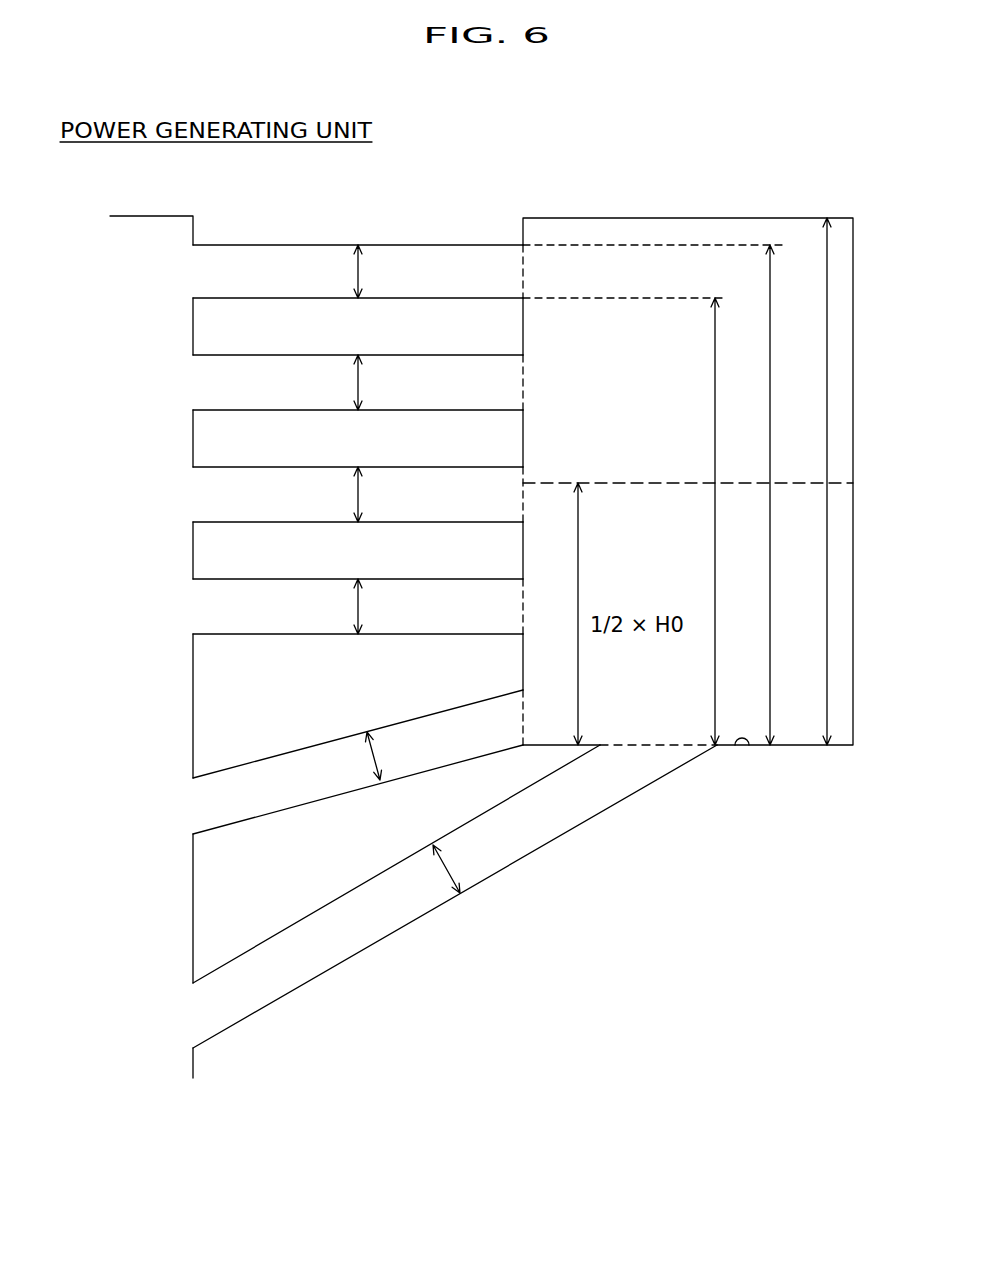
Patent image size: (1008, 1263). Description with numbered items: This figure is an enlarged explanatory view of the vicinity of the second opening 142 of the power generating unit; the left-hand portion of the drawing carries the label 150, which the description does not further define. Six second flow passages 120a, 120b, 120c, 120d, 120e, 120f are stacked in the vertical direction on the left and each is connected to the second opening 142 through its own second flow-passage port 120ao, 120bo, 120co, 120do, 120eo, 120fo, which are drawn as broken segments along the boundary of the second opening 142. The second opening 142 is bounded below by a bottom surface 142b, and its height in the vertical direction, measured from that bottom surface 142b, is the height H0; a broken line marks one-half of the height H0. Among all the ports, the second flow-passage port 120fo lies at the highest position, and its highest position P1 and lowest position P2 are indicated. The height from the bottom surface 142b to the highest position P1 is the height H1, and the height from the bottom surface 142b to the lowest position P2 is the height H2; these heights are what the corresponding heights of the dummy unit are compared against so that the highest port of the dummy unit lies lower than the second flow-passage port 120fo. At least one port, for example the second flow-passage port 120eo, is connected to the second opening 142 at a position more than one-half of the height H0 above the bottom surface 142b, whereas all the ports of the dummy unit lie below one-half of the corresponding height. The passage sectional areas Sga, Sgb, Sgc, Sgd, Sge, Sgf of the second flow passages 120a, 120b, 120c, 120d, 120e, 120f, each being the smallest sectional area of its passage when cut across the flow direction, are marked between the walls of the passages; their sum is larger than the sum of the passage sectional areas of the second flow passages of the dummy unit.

The power generating unit 150 is at (145, 650).
The second opening 142 is at (637, 408).
The bottom surface 142b is at (747, 747).
The second flow passage 120a is at (375, 940).
The second flow passage 120b is at (275, 803).
The second flow passage 120c is at (288, 618).
The second flow passage 120d is at (282, 505).
The second flow passage 120e is at (285, 396).
The second flow passage 120f is at (280, 281).
The second flow-passage port 120ao is at (658, 750).
The second flow-passage port 120bo is at (523, 734).
The second flow-passage port 120co is at (523, 608).
The second flow-passage port 120do is at (523, 498).
The second flow-passage port 120eo is at (523, 388).
The second flow-passage port 120fo is at (523, 277).
The highest position P1 is at (522, 234).
The lowest position P2 is at (509, 303).
The passage sectional area Sga is at (428, 871).
The passage sectional area Sgb is at (354, 756).
The passage sectional area Sgc is at (334, 606).
The passage sectional area Sgd is at (336, 494).
The passage sectional area Sge is at (336, 382).
The passage sectional area Sgf is at (334, 271).
The height of the second opening H0 is at (843, 481).
The height to highest position P1 H1 is at (665, 495).
The height to lowest position P2 H2 is at (637, 521).